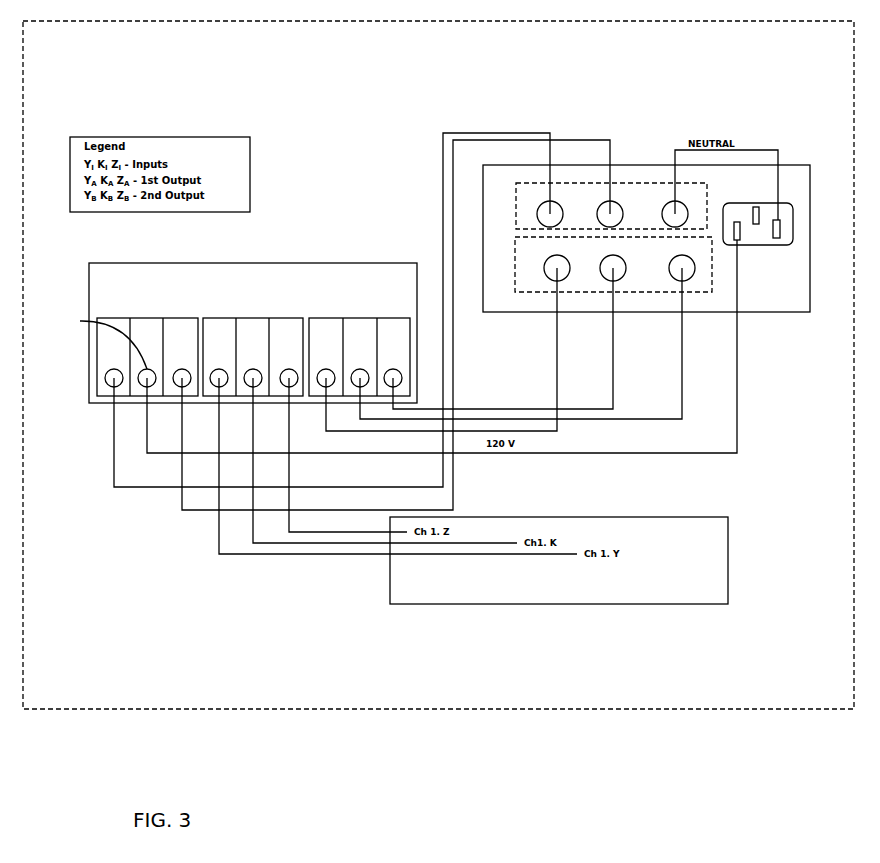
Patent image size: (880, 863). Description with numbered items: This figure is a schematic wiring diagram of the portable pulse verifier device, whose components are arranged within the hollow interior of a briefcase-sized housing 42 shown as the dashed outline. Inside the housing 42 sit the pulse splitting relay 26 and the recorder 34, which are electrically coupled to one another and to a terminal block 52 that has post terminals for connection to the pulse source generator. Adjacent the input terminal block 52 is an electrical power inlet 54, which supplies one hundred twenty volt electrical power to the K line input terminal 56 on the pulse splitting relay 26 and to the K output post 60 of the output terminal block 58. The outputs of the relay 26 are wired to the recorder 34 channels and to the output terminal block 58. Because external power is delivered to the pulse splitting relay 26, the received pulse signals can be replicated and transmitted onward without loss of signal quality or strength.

The pulse splitting relay 26 is at (257, 262).
The recorder 34 is at (553, 604).
The housing 42 is at (550, 710).
The terminal block 52 is at (644, 213).
The electrical power inlet 54 is at (757, 246).
The K line input terminal 56 is at (97, 339).
The output terminal block 58 is at (533, 293).
The K output post 60 is at (662, 207).